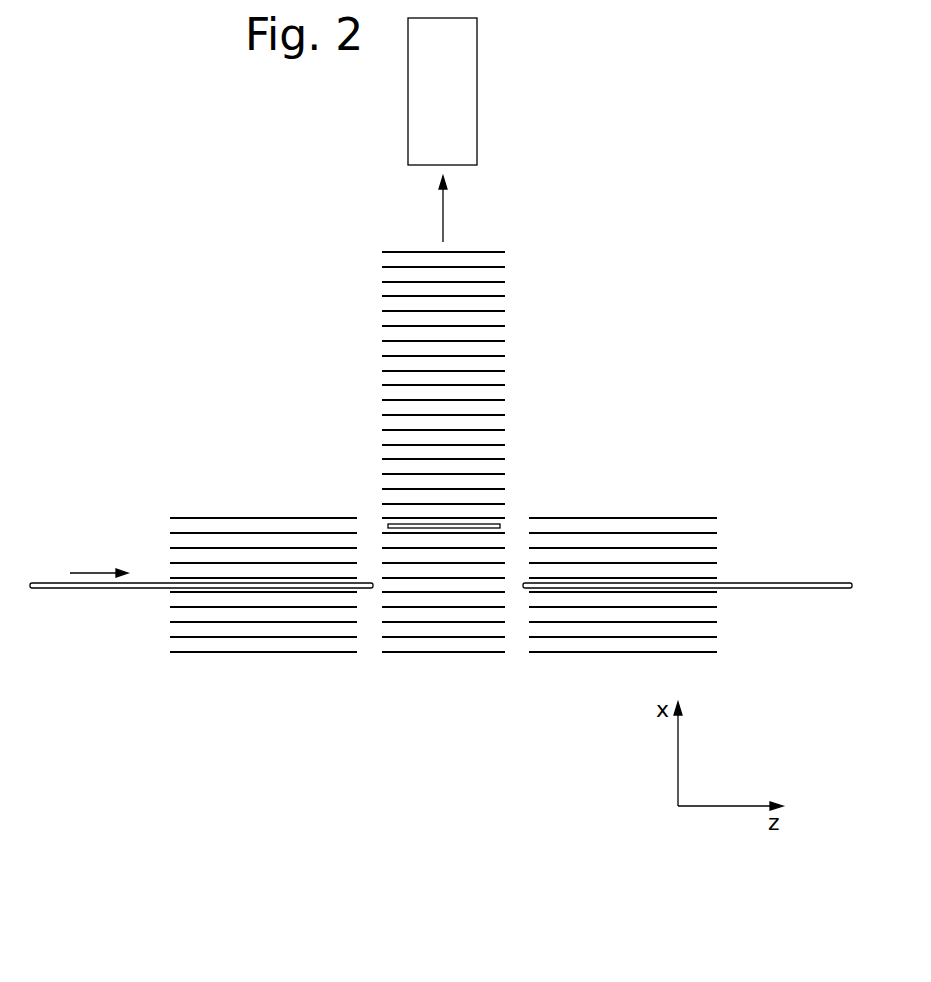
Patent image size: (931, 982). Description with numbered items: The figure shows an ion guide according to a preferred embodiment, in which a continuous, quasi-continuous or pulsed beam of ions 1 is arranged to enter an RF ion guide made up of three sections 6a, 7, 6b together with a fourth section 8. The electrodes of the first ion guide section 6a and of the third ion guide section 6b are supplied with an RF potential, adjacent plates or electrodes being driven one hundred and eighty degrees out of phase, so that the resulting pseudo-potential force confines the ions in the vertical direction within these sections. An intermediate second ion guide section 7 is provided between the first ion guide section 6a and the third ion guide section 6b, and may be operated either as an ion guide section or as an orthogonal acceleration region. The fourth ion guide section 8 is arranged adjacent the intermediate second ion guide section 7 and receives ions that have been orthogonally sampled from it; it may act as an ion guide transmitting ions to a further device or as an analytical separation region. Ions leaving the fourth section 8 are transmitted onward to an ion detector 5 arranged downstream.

The beam of ions 1 is at (82, 588).
The ion detector 5 is at (445, 106).
The first ion guide section 6a is at (267, 653).
The third ion guide section 6b is at (587, 653).
The intermediate second ion guide section 7 is at (502, 660).
The fourth ion guide section 8 is at (382, 246).